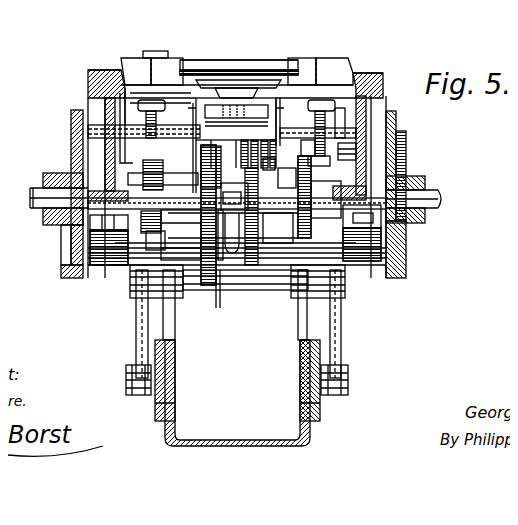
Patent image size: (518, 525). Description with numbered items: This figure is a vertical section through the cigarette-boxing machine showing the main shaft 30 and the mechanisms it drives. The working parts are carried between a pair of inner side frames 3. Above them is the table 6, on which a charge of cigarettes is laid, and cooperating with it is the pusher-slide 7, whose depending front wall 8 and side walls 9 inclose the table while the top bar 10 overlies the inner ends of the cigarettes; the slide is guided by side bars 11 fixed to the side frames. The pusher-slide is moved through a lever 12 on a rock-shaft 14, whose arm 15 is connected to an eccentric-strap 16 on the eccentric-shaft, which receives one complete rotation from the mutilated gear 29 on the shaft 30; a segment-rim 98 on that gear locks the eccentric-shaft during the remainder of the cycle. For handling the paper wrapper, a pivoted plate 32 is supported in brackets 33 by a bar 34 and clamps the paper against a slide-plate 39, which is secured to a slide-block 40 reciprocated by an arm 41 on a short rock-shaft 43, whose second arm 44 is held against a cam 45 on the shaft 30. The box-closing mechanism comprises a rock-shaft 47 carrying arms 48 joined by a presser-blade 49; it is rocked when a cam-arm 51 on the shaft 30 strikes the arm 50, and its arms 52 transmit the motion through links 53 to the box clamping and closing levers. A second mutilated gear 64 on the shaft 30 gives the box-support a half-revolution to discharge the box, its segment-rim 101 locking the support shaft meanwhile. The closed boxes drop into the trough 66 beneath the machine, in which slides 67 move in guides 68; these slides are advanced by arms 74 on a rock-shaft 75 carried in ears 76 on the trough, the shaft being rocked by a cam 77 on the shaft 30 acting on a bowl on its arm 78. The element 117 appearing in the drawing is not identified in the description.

The inner side frames 3 is at (81, 80).
The table 6 is at (225, 66).
The pusher-slide 7 is at (237, 71).
The front wall 8 is at (212, 64).
The side walls 9 is at (172, 71).
The top bar 10 is at (145, 46).
The side bars 11 is at (100, 64).
The lever 12 is at (243, 272).
The rock-shaft 14 is at (335, 240).
The arm 15 is at (156, 238).
The eccentric-strap 16 is at (104, 172).
The mutilated gear 29 is at (63, 108).
The shaft 30 is at (26, 186).
The pivoted plate 32 is at (196, 82).
The brackets 33 is at (305, 90).
The bar 34 is at (338, 178).
The slide-plate 39 is at (276, 80).
The slide-block 40 is at (258, 132).
The arm 41 is at (228, 130).
The rock-shaft 43 is at (260, 160).
The arm 44 is at (232, 199).
The cam 45 is at (288, 214).
The rock-shaft 47 is at (193, 150).
The arms 48 is at (188, 102).
The presser-blade 49 is at (236, 119).
The arm 50 is at (306, 140).
The cam-arm 51 is at (326, 199).
The arms 52 is at (178, 128).
The links 53 is at (330, 112).
The mutilated gear 64 is at (390, 110).
The trough 66 is at (237, 393).
The slides 67 is at (130, 383).
The guides 68 is at (147, 340).
The arms 74 is at (128, 313).
The rock-shaft 75 is at (279, 290).
The ears 76 is at (167, 296).
The cam 77 is at (200, 178).
The arm 78 is at (212, 296).
The segment-rim 98 is at (53, 243).
The segment-rim 101 is at (398, 132).
The pinion 117 is at (156, 161).